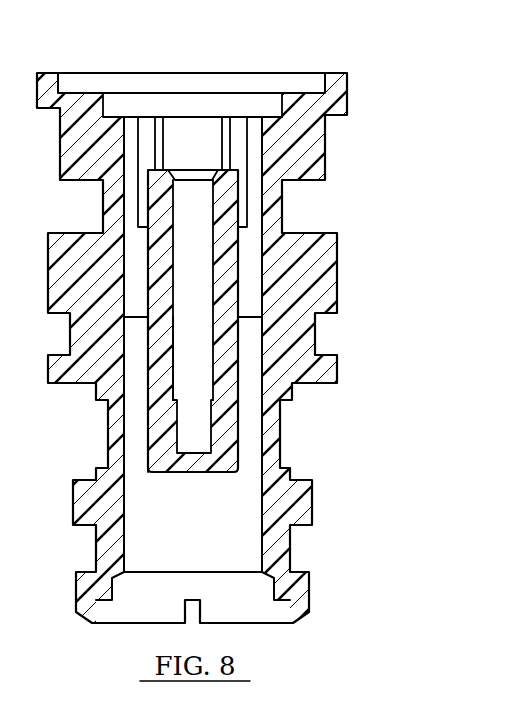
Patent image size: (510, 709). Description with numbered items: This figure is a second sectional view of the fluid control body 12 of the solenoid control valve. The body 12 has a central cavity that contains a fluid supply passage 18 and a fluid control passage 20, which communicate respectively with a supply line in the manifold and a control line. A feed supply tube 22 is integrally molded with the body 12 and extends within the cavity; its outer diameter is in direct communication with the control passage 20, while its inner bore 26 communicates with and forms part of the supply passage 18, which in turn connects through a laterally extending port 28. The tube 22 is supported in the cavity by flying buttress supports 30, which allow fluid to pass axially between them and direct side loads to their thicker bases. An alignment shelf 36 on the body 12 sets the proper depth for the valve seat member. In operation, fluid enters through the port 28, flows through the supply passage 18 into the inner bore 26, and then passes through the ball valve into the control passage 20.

The fluid control body 12 is at (341, 233).
The fluid supply passage 18 is at (185, 363).
The fluid control passage 20 is at (183, 548).
The feed supply tube 22 is at (222, 288).
The inner bore 26 is at (207, 358).
The laterally extending port 28 is at (183, 442).
The flying buttress supports 30 is at (158, 133).
The alignment shelf 36 is at (267, 107).